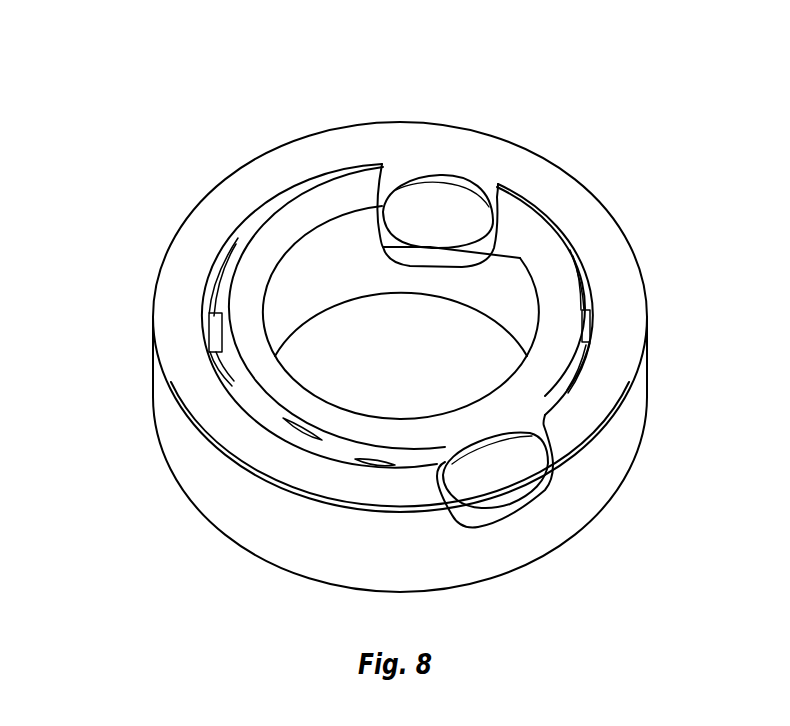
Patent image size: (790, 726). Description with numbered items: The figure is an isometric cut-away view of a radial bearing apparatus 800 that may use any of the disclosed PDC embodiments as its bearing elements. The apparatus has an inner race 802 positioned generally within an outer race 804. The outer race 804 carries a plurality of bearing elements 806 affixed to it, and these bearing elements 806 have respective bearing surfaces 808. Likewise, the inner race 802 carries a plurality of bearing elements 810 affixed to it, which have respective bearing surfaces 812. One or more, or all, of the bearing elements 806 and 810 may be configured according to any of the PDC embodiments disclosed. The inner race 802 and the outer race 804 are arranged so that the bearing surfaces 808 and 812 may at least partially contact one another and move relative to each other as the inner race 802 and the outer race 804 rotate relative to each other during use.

The radial bearing apparatus 800 is at (604, 66).
The inner race 802 is at (324, 205).
The outer race 804 is at (152, 560).
The bearing elements 806 is at (468, 187).
The bearing surfaces 808 is at (441, 205).
The bearing elements 810 is at (488, 445).
The bearing surfaces 812 is at (508, 480).